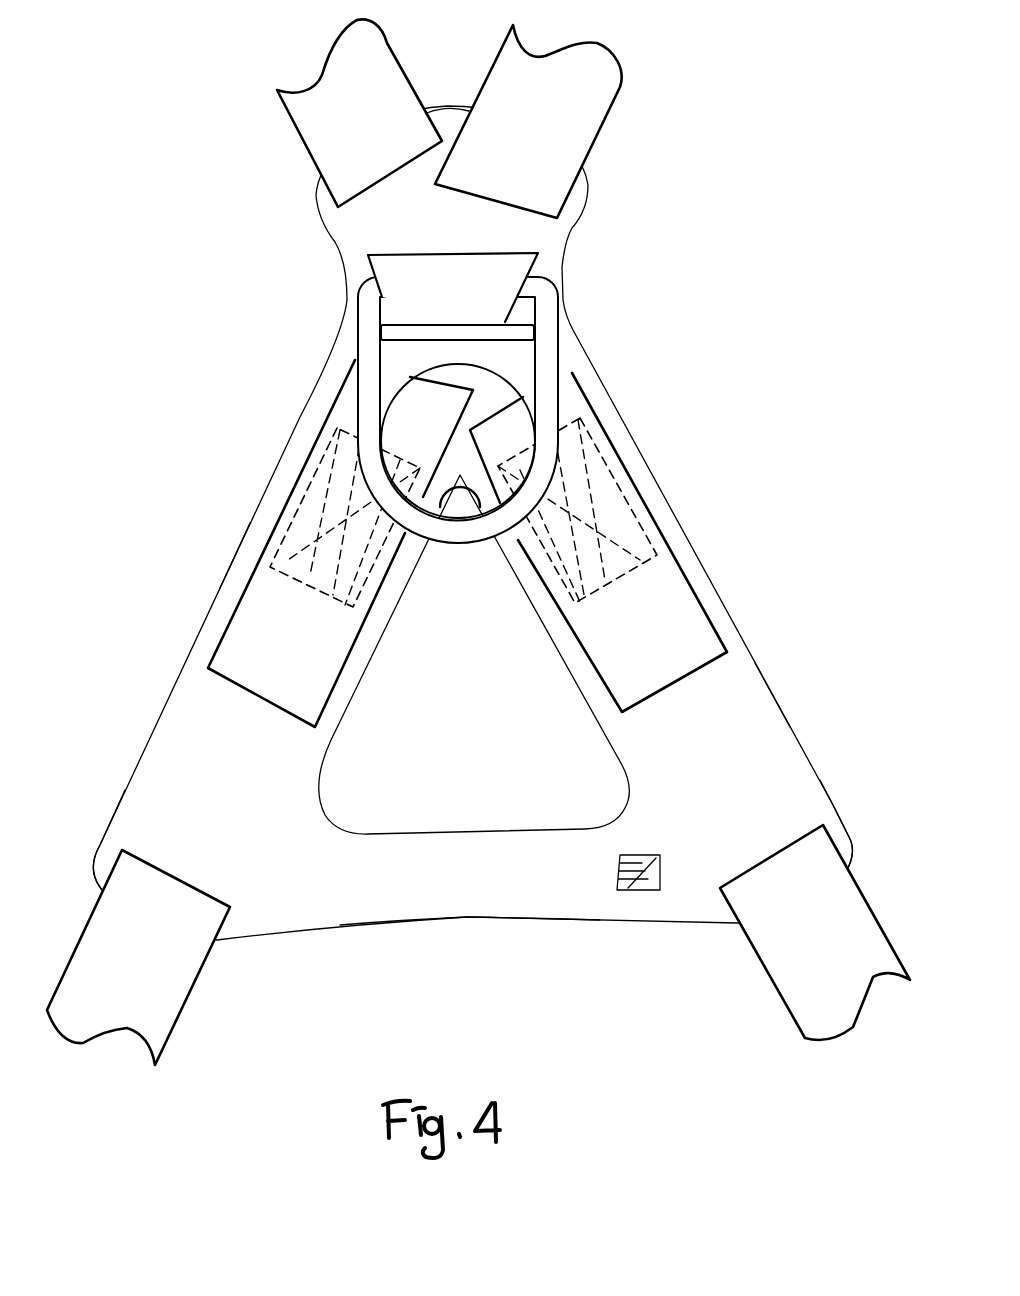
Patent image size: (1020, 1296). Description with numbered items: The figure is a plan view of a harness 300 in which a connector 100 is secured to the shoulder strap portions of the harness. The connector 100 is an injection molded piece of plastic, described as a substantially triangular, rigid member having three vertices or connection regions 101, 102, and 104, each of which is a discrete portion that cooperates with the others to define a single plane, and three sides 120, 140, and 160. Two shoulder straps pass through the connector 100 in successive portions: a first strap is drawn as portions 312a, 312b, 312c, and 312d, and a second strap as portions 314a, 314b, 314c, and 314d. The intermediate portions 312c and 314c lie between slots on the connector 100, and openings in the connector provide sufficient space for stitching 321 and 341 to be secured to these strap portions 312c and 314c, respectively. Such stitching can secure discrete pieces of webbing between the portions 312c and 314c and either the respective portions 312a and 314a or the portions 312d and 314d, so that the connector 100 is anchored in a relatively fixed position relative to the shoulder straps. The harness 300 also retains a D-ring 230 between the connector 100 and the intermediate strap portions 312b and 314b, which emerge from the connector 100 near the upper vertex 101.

The harness 300 is at (475, 536).
The connector 100 is at (298, 415).
The vertex or connection region 101 is at (440, 117).
The vertex or connection region 102 is at (122, 825).
The vertex or connection region 104 is at (815, 800).
The side 120 is at (237, 570).
The side 140 is at (770, 700).
The side 160 is at (467, 907).
The D-ring 230 is at (548, 408).
The strap portion 312a is at (592, 105).
The intermediate strap portion 312b is at (522, 268).
The strap portion 312c is at (242, 633).
The strap portion 312d is at (167, 998).
The strap portion 314a is at (307, 122).
The intermediate strap portion 314b is at (380, 262).
The strap portion 314c is at (688, 625).
The strap portion 314d is at (785, 967).
The stitching 321 is at (323, 510).
The stitching 341 is at (600, 502).